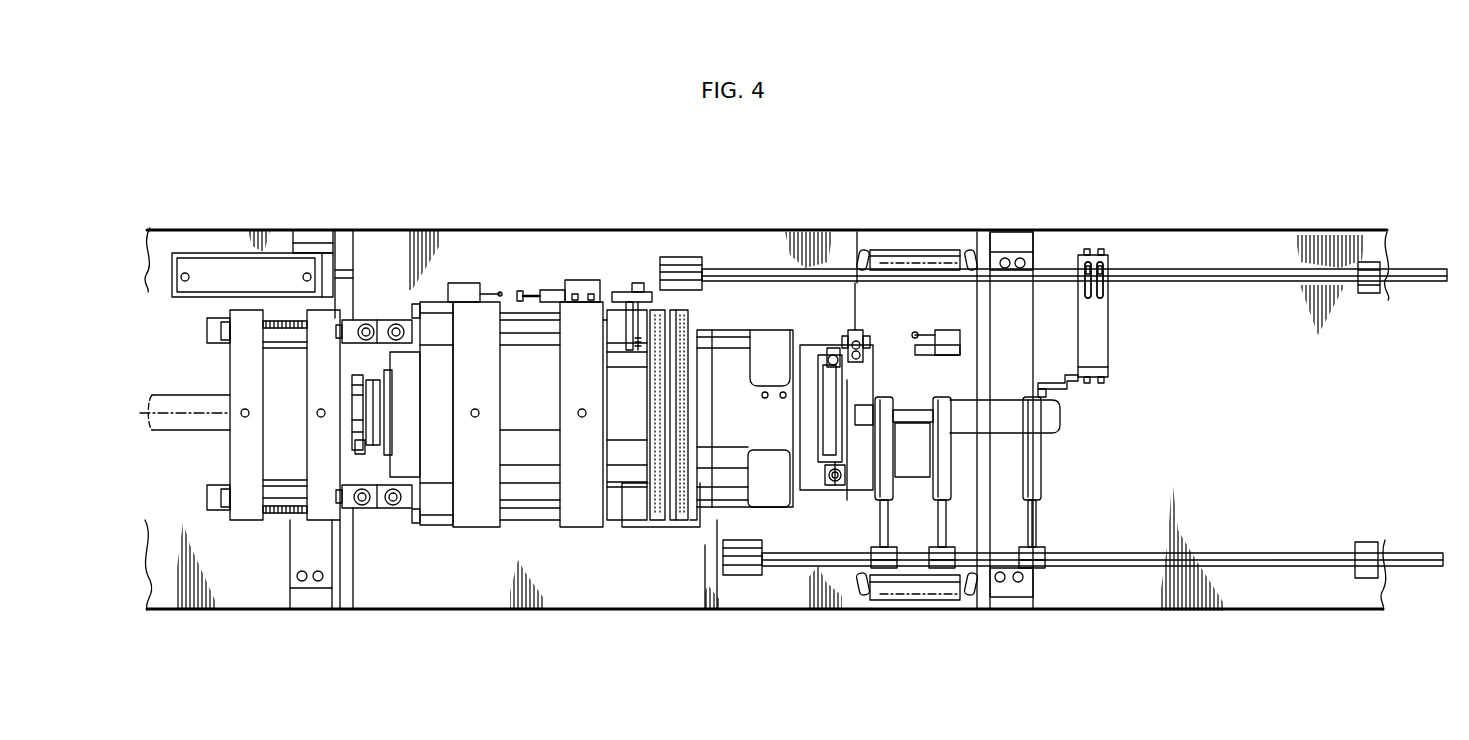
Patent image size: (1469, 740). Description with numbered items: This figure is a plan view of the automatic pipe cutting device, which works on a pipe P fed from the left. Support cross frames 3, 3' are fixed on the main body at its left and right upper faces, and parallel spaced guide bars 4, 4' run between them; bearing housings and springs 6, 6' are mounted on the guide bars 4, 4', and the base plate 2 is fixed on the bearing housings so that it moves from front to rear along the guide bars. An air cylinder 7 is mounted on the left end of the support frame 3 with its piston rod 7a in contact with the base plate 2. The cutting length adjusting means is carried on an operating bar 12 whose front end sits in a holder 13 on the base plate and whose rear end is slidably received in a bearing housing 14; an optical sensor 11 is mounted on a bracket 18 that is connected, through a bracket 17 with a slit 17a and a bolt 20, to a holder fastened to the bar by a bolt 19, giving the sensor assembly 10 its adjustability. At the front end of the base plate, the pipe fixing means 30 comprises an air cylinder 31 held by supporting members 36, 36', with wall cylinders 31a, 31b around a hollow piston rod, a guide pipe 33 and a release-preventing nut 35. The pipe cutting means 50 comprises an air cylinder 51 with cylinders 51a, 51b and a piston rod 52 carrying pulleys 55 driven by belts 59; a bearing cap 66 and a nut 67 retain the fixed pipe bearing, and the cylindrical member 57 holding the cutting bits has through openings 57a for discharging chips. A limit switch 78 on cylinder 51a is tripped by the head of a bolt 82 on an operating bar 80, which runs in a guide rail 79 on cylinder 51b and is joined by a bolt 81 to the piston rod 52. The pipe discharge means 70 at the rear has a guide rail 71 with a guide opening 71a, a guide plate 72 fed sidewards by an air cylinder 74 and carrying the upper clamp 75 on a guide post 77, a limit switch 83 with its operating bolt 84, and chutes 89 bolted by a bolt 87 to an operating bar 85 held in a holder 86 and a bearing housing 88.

The base plate 2 is at (402, 230).
The support cross frame 3 is at (344, 393).
The support cross frame 3' is at (1005, 396).
The guide bar 4 is at (951, 605).
The guide bar 4' is at (915, 235).
The spring 6 is at (915, 607).
The spring 6' is at (917, 238).
The air cylinder 7 is at (210, 260).
The piston rod 7a is at (348, 278).
The transfer device 10 is at (1114, 384).
The optical sensor 11 is at (1050, 392).
The operating bar 12 is at (1262, 283).
The holder 13 is at (698, 262).
The bearing housing 14 is at (1368, 294).
The bracket 17 is at (1108, 338).
The slit 17a is at (1108, 292).
The bracket 18 is at (1045, 383).
The bolt 19 is at (1100, 250).
The bolt 20 is at (1083, 268).
The pipe fixing means 30 is at (148, 522).
The air cylinder 31 is at (284, 470).
The cylinder 31a is at (240, 513).
The cylinder 31b is at (322, 513).
The guide pipe 33 is at (350, 415).
The release-preventing nut 35 is at (360, 453).
The supporting member 36 is at (193, 496).
The supporting member 36' is at (191, 332).
The pipe cutting means 50 is at (541, 617).
The air cylinder 51 is at (533, 510).
The cylinder 51a is at (477, 528).
The cylinder 51b is at (583, 528).
The piston rod 52 is at (614, 446).
The pulleys 55 is at (656, 520).
The cylindrical member 57 is at (738, 330).
The through opening 57a is at (760, 455).
The belt 59 is at (679, 521).
The bearing cap 66 is at (434, 520).
The nut 67 is at (388, 370).
The pipe discharge means 70 is at (899, 617).
The guide rail 71 is at (925, 457).
The guide opening 71a is at (897, 442).
The guide plate 72 is at (808, 346).
The air cylinder 74 is at (1058, 426).
The upper clamp 75 is at (822, 452).
The guide post 77 is at (836, 488).
The limit switch 78 is at (458, 284).
The guide rail 79 is at (574, 281).
The operating bar 80 is at (628, 292).
The bolt 81 is at (640, 283).
The bolt 82 is at (519, 291).
The limit switch 83 is at (948, 332).
The operating bolt 84 is at (863, 336).
The operating bar 85 is at (1210, 553).
The holder 86 is at (748, 566).
The bolt 87 is at (1040, 565).
The bearing housing 88 is at (1358, 572).
The chute 89 is at (1042, 482).
The pipe P is at (150, 410).